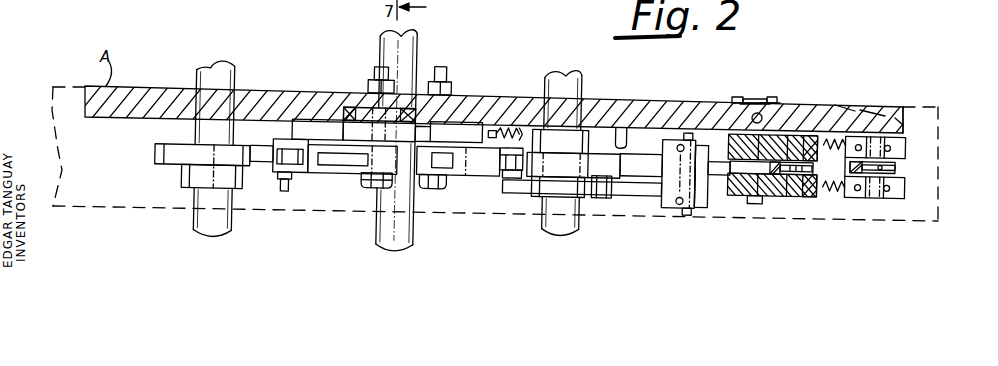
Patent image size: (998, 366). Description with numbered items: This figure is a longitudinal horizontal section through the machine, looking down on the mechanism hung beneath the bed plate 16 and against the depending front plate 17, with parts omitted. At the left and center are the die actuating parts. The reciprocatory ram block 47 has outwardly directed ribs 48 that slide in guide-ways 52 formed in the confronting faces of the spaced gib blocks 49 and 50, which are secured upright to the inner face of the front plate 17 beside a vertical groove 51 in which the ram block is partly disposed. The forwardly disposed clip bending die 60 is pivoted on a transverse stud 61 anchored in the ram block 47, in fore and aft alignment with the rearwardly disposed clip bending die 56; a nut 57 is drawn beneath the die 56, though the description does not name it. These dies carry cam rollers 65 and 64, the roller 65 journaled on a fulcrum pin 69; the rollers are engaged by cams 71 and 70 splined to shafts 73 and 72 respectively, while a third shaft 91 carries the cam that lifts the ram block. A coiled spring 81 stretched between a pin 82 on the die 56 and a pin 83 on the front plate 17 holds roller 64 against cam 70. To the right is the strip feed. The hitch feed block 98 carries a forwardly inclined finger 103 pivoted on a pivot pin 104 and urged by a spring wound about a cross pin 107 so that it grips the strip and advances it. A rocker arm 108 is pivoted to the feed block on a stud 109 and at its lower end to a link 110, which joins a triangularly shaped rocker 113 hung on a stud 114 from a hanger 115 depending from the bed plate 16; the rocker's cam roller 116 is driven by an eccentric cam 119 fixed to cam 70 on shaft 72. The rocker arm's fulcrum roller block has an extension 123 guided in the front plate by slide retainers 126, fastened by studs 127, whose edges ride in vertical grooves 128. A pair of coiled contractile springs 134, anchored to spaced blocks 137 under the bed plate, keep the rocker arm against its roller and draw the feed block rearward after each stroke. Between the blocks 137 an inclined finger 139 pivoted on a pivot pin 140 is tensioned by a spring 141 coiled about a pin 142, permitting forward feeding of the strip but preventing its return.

The bed plate 16 is at (938, 173).
The front plate 17 is at (133, 90).
The ram block 47 is at (362, 112).
The ribs 48 is at (337, 118).
The gib block 49 is at (308, 128).
The gib block 50 is at (460, 128).
The vertical groove 51 is at (439, 80).
The guide-ways 52 is at (345, 141).
The rearwardly disposed clip bending die 56 is at (479, 176).
The nut 57 is at (429, 190).
The forwardly disposed clip bending die 60 is at (352, 162).
The transverse stud 61 is at (372, 186).
The cam roller 64 is at (512, 178).
The cam roller 65 is at (282, 174).
The fulcrum pin 69 is at (285, 192).
The cam 70 is at (606, 178).
The cam 71 is at (170, 158).
The shaft 72 is at (565, 234).
The shaft 73 is at (205, 215).
The coiled spring 81 is at (521, 130).
The pin 82 is at (508, 130).
The pin 83 is at (619, 127).
The shaft 91 is at (388, 246).
The hitch feed block 98 is at (792, 133).
The finger 103 is at (800, 197).
The pivot pin 104 is at (852, 95).
The cross pin 107 is at (866, 108).
The rocker arm 108 is at (737, 176).
The stud 109 is at (755, 205).
The link 110 is at (722, 176).
The triangularly shaped rocker 113 is at (636, 182).
The stud 114 is at (680, 216).
The hanger 115 is at (699, 143).
The cam roller 116 is at (601, 198).
The eccentric cam 119 is at (525, 195).
The extension 123 is at (772, 97).
The slide retainers 126 is at (775, 103).
The studs 127 is at (778, 98).
The vertical grooves 128 is at (752, 98).
The coiled contractile springs 134 is at (835, 192).
The spaced blocks 137 is at (907, 146).
The inclined finger 139 is at (855, 200).
The pivot pin 140 is at (905, 110).
The spring 141 is at (895, 168).
The pin 142 is at (935, 110).